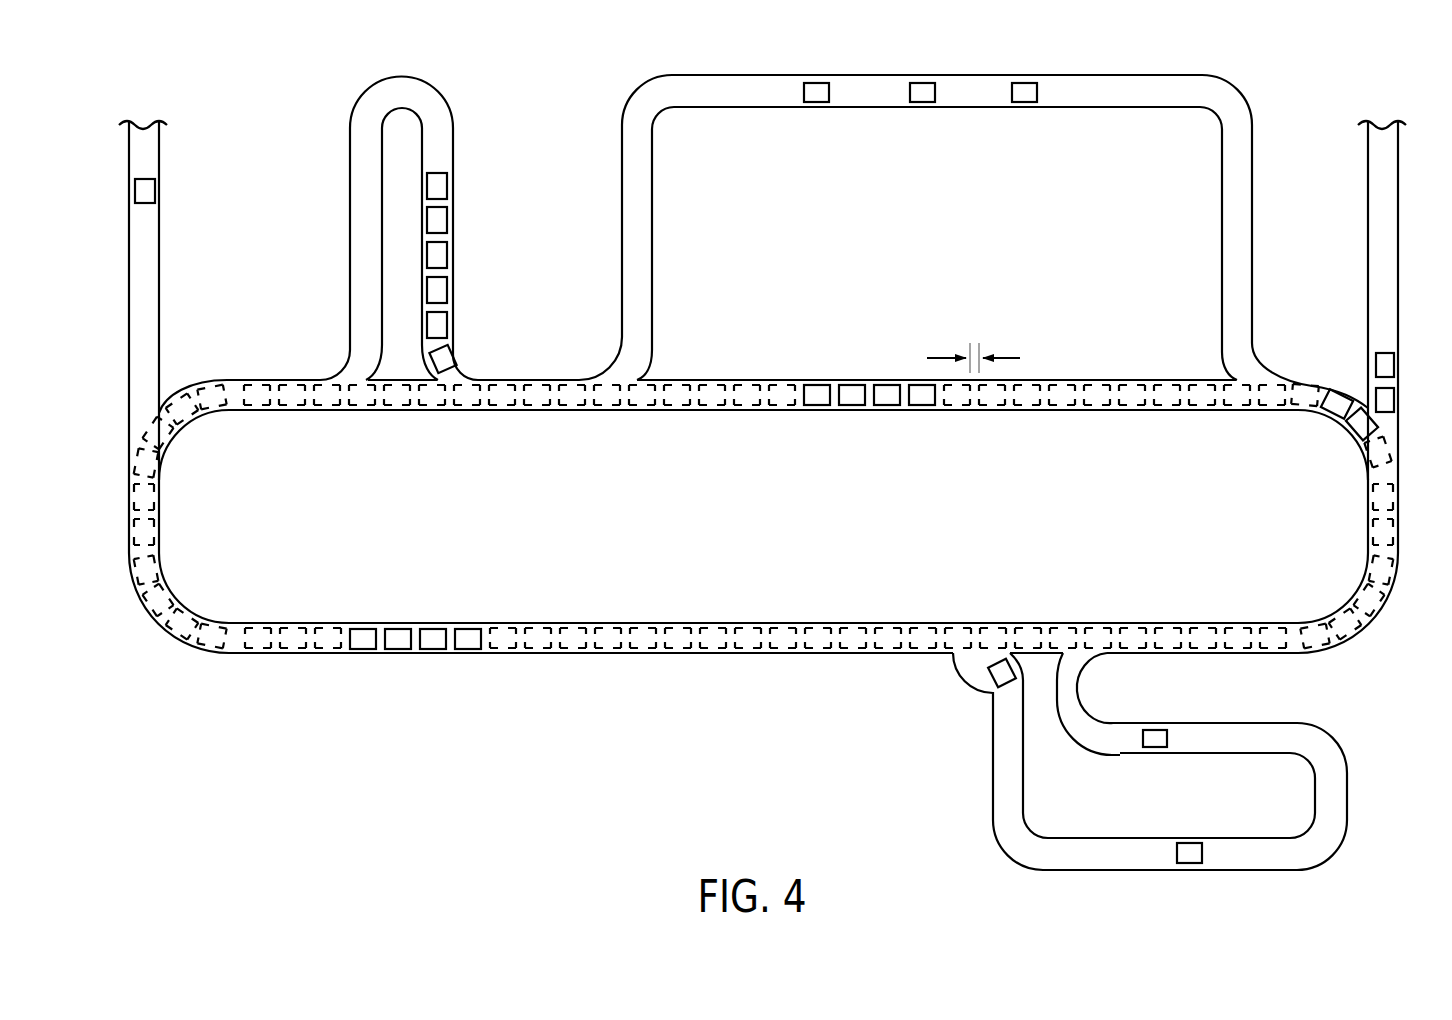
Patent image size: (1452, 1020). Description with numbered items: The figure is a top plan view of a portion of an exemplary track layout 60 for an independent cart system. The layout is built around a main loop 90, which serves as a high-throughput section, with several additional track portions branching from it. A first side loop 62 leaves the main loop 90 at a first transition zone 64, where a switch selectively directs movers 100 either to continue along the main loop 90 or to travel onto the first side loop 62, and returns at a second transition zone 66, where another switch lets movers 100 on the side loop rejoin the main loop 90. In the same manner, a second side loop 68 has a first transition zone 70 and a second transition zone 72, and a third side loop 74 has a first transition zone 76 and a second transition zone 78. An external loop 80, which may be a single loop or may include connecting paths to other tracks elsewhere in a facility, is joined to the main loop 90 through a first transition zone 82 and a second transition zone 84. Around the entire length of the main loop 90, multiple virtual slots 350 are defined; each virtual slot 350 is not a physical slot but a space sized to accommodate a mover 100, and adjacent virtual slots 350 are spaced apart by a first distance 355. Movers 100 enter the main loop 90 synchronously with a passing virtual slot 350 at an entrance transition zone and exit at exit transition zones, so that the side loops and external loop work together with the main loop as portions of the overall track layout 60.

The track layout 60 is at (320, 749).
The first side loop 62 is at (455, 153).
The first transition zone 64 is at (323, 359).
The second transition zone 66 is at (479, 355).
The second side loop 68 is at (653, 207).
The first transition zone 70 is at (598, 356).
The second transition zone 72 is at (1270, 351).
The third side loop 74 is at (1259, 722).
The first transition zone 76 is at (1105, 669).
The second transition zone 78 is at (963, 672).
The external loop 80 is at (160, 262).
The first transition zone 82 is at (116, 401).
The second transition zone 84 is at (1406, 393).
The main loop 90 is at (463, 622).
The mover 100 is at (144, 186).
The virtual slot 350 is at (713, 388).
The first distance 355 is at (972, 335).